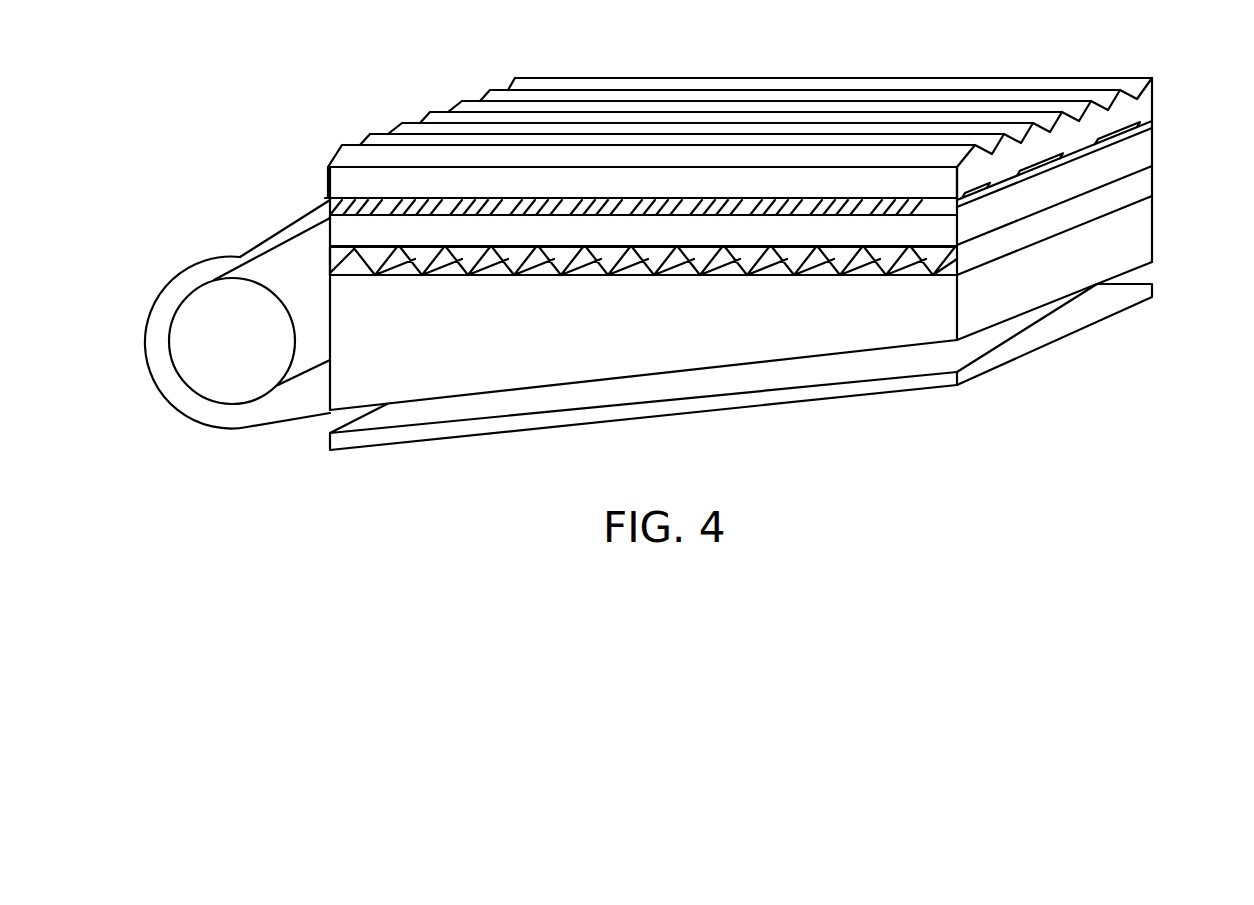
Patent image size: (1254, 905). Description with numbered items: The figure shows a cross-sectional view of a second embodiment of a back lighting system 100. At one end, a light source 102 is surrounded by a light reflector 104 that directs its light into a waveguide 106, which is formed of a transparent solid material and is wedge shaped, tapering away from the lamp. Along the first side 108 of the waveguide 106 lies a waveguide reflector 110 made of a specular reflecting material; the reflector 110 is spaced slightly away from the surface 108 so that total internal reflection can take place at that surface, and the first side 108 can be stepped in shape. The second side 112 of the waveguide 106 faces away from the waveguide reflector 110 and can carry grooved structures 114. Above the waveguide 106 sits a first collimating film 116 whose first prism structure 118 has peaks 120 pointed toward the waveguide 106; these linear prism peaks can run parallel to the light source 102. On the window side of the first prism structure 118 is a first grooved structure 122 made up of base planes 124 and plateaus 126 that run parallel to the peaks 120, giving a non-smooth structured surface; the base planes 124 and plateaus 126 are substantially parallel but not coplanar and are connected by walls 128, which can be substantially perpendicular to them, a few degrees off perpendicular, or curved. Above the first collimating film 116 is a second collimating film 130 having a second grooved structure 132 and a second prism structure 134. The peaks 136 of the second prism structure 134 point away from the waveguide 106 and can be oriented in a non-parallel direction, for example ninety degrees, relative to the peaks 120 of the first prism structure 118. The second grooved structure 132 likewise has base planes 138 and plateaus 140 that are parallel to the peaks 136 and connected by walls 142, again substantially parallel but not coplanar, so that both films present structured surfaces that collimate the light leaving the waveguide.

The back lighting system 100 is at (430, 481).
The light source 102 is at (228, 406).
The light reflector 104 is at (190, 290).
The waveguide 106 is at (1153, 250).
The first side 108 is at (895, 350).
The waveguide reflector 110 is at (1060, 343).
The second side 112 is at (1153, 211).
The grooved structures 114 is at (667, 278).
The first collimating film 116 is at (1153, 151).
The first prism structure 118 is at (393, 277).
The peaks 120 is at (463, 277).
The first grooved structures 122 is at (343, 228).
The base planes 124 is at (598, 217).
The plateaus 126 is at (692, 213).
The walls 128 is at (468, 217).
The second collimating film 130 is at (1153, 98).
The second grooved structure 132 is at (415, 177).
The second prism structure 134 is at (1107, 93).
The peaks 136 is at (848, 78).
The base planes 138 is at (1047, 153).
The plateaus 140 is at (1080, 125).
The walls 142 is at (1010, 172).